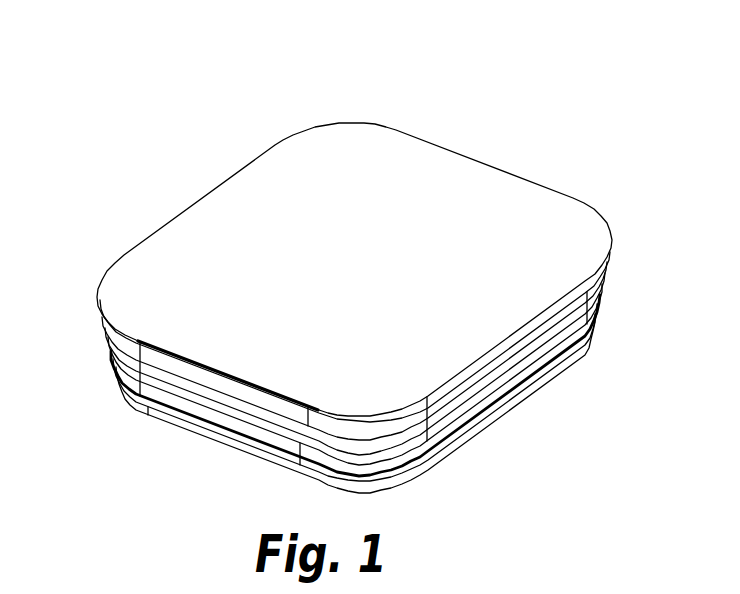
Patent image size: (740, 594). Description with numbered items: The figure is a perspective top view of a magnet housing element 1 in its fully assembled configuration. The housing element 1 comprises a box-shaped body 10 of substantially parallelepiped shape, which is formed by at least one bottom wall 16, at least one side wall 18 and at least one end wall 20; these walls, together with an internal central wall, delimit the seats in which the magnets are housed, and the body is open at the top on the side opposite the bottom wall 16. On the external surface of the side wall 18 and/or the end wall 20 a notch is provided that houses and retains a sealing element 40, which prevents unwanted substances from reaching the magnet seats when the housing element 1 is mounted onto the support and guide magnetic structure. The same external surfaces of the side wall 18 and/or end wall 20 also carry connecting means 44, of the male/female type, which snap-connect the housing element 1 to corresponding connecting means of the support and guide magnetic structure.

The housing element 1 is at (318, 288).
The box-shaped body 10 is at (354, 257).
The bottom wall 16 is at (366, 158).
The side wall 18 is at (502, 352).
The end wall 20 is at (193, 375).
The connecting means 44 is at (125, 360).
The sealing element 40 is at (398, 462).